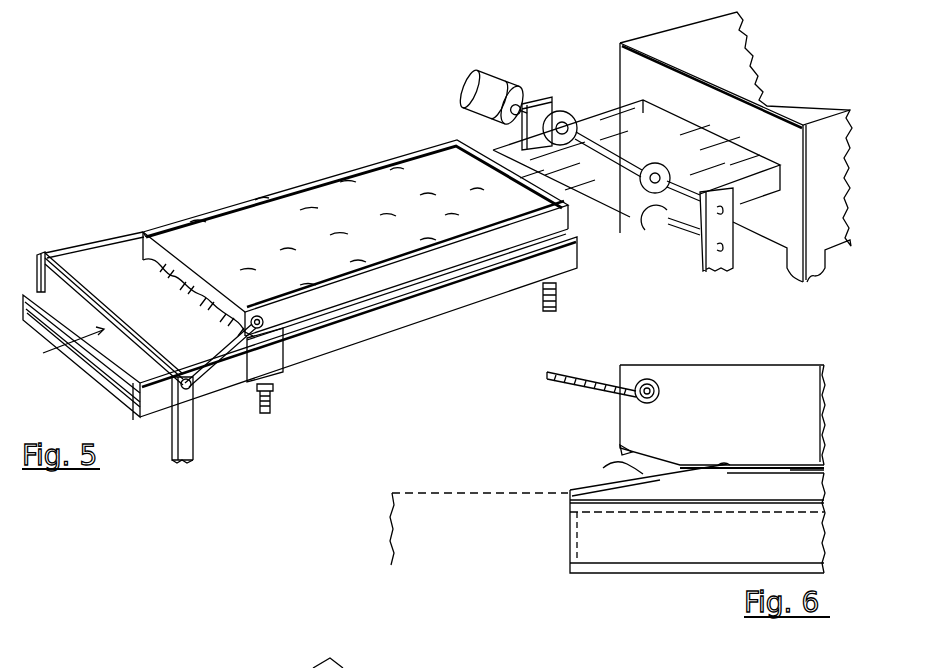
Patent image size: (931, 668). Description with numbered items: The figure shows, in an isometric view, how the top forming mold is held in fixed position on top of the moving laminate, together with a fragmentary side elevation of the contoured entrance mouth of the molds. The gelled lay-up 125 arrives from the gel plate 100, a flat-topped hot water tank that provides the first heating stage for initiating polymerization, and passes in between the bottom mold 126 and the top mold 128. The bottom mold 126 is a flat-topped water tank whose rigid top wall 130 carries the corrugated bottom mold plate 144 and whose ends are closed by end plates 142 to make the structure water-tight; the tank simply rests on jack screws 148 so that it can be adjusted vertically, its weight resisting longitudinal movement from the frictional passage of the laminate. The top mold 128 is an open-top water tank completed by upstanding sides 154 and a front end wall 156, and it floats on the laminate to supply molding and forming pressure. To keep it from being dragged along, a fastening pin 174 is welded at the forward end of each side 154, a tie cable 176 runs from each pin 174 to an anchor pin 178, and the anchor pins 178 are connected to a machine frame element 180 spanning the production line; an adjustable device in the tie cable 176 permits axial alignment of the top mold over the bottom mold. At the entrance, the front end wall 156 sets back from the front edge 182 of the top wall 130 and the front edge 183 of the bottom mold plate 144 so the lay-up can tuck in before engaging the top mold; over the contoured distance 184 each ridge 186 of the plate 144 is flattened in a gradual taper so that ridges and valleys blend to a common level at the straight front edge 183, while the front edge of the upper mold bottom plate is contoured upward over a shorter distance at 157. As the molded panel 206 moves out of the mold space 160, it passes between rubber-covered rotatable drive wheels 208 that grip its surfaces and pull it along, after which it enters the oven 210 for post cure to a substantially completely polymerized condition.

In FIG. 5, the gel plate 100 is at (124, 425).
In FIG. 6, the gel plate 100 is at (444, 492).
In FIG. 5, the gelled lay-up 125 is at (97, 378).
In FIG. 5, the bottom mold 126 is at (347, 358).
In FIG. 5, the top mold 128 is at (383, 158).
In FIG. 6, the top mold 128 is at (723, 364).
In FIG. 6, the top wall 130 is at (586, 514).
In FIG. 6, the end plates 142 is at (567, 548).
In FIG. 6, the bottom mold plate 144 is at (814, 483).
In FIG. 5, the jack screws 148 is at (545, 306).
In FIG. 5, the upstanding sides 154 is at (352, 167).
In FIG. 6, the upstanding sides 154 is at (797, 366).
In FIG. 5, the front end wall 156 is at (173, 244).
In FIG. 6, the front end wall 156 is at (616, 370).
In FIG. 6, the contoured front edge of upper mold bottom plate 157 is at (620, 449).
In FIG. 6, the mold space 160 is at (812, 461).
In FIG. 5, the fastening pin 174 is at (284, 372).
In FIG. 6, the fastening pin 174 is at (658, 378).
In FIG. 5, the tie cable 176 is at (101, 246).
In FIG. 6, the tie cable 176 is at (590, 386).
In FIG. 5, the anchor pin 178 is at (45, 250).
In FIG. 5, the machine frame element 180 is at (172, 443).
In FIG. 6, the front edge of top plate 182 is at (570, 499).
In FIG. 6, the front edge of bottom mold sheet 183 is at (568, 490).
In FIG. 6, the contoured distance 184 is at (618, 466).
In FIG. 6, the ridges 186 is at (738, 461).
In FIG. 5, the molded panel 206 is at (497, 145).
In FIG. 5, the drive wheels 208 is at (561, 119).
In FIG. 5, the oven 210 is at (659, 45).